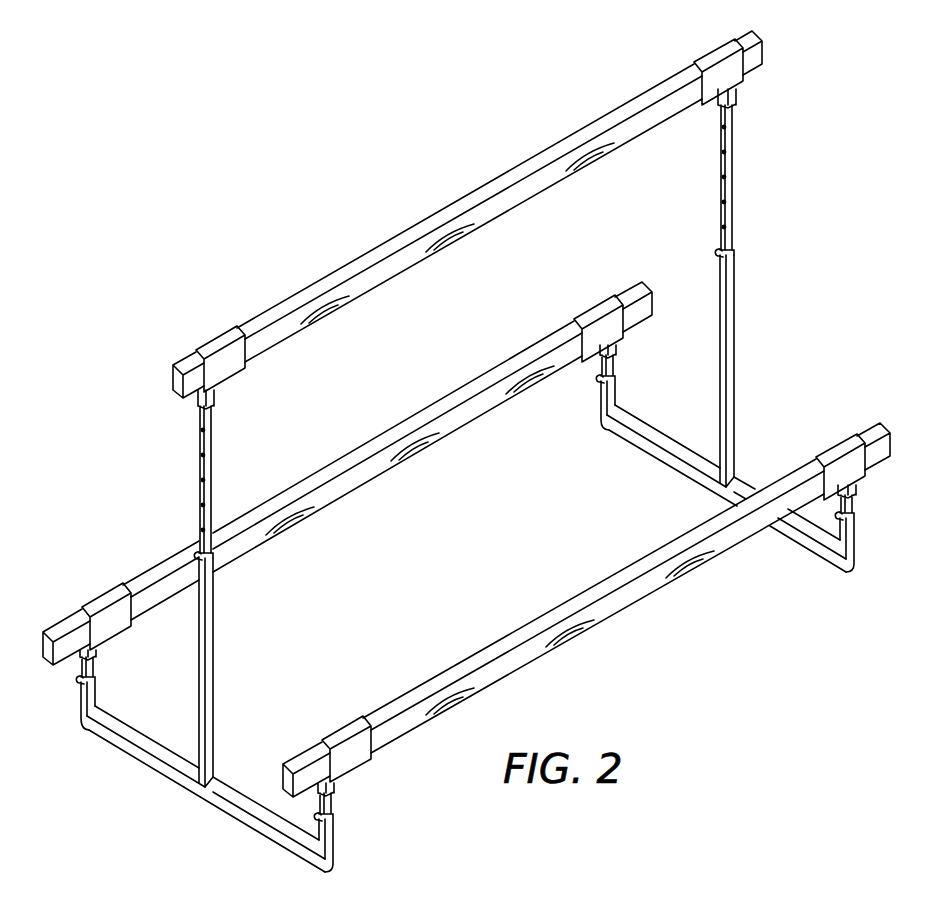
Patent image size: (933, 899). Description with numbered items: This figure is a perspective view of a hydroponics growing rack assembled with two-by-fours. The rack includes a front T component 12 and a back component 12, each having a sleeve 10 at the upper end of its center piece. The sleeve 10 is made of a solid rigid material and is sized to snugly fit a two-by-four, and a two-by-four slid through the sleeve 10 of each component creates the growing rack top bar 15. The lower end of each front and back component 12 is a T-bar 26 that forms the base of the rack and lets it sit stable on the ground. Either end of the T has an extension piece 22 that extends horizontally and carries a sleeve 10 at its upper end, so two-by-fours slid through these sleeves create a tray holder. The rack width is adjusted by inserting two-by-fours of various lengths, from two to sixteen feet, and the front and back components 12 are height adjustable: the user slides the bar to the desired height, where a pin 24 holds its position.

The sleeve 10 is at (711, 60).
The front T component and back component 12 is at (735, 340).
The growing rack top bar 15 is at (453, 212).
The extension piece 22 is at (862, 486).
The pin 24 is at (716, 254).
The T-bar 26 is at (678, 480).